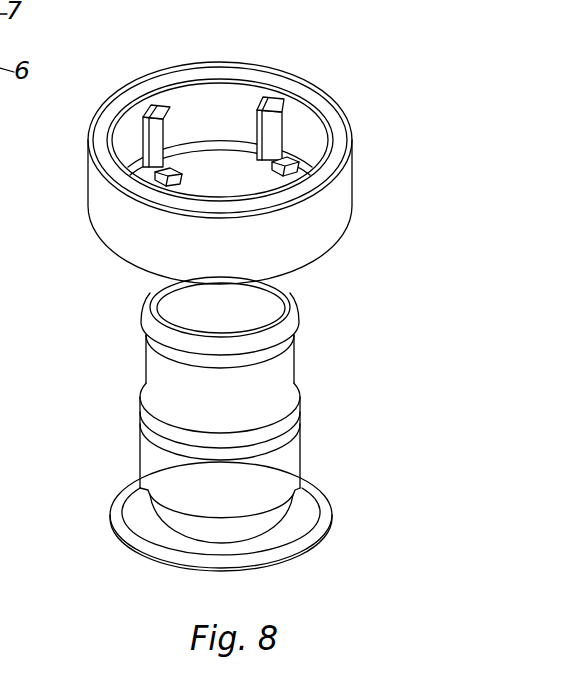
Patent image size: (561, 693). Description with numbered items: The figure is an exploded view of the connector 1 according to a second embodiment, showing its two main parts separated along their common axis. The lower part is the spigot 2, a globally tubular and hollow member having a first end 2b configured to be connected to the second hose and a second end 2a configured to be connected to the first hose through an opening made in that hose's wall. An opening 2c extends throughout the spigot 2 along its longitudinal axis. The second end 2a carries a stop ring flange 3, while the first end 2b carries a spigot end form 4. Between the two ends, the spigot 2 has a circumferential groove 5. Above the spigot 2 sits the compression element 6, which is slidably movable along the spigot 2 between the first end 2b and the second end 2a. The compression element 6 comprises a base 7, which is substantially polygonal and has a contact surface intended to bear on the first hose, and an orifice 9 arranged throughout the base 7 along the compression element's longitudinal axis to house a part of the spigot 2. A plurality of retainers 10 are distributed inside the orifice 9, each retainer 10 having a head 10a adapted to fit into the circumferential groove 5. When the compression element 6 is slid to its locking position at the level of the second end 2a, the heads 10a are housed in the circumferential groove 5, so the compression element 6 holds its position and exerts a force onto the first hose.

The connector 1 is at (203, 424).
The spigot 2 is at (209, 424).
The second end 2a is at (92, 496).
The first end 2b is at (228, 322).
The opening 2c is at (236, 311).
The stop ring flange 3 is at (283, 531).
The spigot end form 4 is at (295, 328).
The circumferential groove 5 is at (270, 451).
The compression element 6 is at (202, 152).
The base 7 is at (283, 243).
The orifice 9 is at (208, 183).
The retainers 10 is at (267, 125).
The head 10a is at (152, 110).